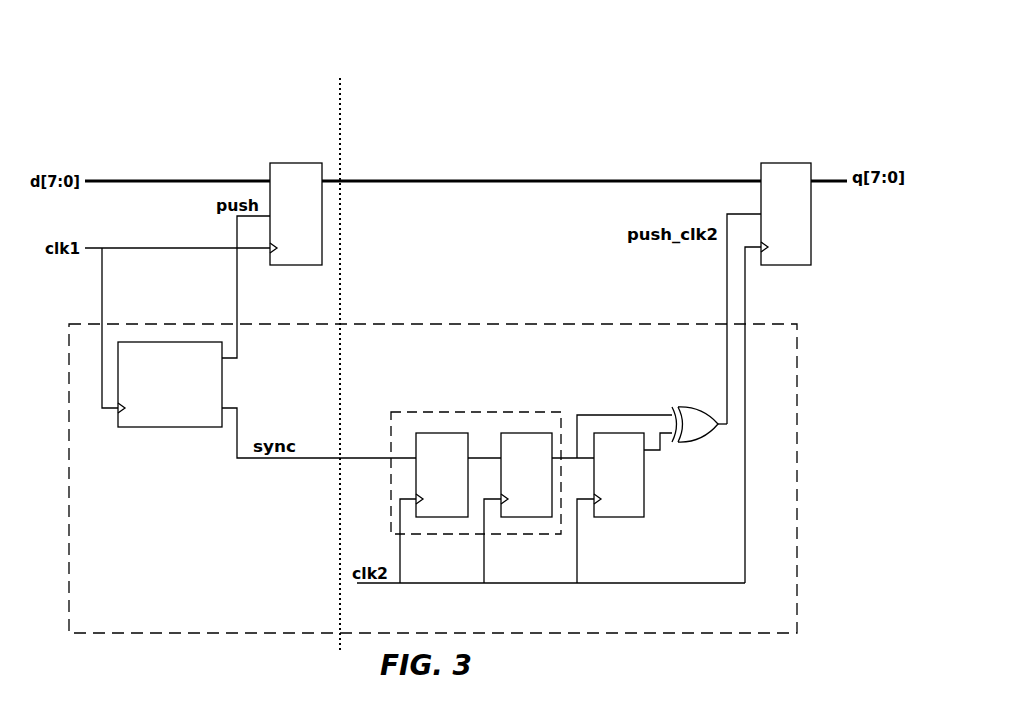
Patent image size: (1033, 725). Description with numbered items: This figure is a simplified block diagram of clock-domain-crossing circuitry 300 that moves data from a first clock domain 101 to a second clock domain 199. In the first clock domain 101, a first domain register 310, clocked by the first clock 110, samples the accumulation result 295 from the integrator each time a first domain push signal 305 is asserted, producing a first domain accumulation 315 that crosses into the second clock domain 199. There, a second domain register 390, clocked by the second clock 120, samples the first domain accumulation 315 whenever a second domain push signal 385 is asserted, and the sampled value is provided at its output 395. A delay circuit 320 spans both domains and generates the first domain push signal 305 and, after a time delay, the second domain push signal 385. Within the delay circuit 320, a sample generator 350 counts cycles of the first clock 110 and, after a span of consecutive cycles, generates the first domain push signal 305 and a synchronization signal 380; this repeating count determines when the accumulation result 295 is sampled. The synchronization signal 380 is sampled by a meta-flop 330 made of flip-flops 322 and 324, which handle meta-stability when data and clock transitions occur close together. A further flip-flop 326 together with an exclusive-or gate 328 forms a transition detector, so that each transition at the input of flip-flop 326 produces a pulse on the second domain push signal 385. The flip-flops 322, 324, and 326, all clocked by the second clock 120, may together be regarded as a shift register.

The clock-domain-crossing circuitry 300 is at (315, 38).
The first clock domain 101 is at (200, 92).
The second clock domain 199 is at (468, 92).
The accumulation result 295 is at (155, 181).
The first domain register 310 is at (297, 163).
The first domain accumulation 315 is at (485, 181).
The second domain register 390 is at (783, 163).
The output data bus q[7:0] 395 is at (830, 185).
The first clock 110 is at (112, 248).
The first domain push signal 305 is at (240, 297).
The sample generator 350 is at (170, 384).
The synchronization signal 380 is at (313, 459).
The delay circuit 320 is at (797, 422).
The meta-flop 330 is at (430, 411).
The flip-flop 322 is at (458, 475).
The flip-flop 324 is at (547, 475).
The flip-flop 326 is at (633, 475).
The exclusive-or gate 328 is at (695, 404).
The second domain push signal 385 is at (727, 293).
The second clock 120 is at (432, 584).